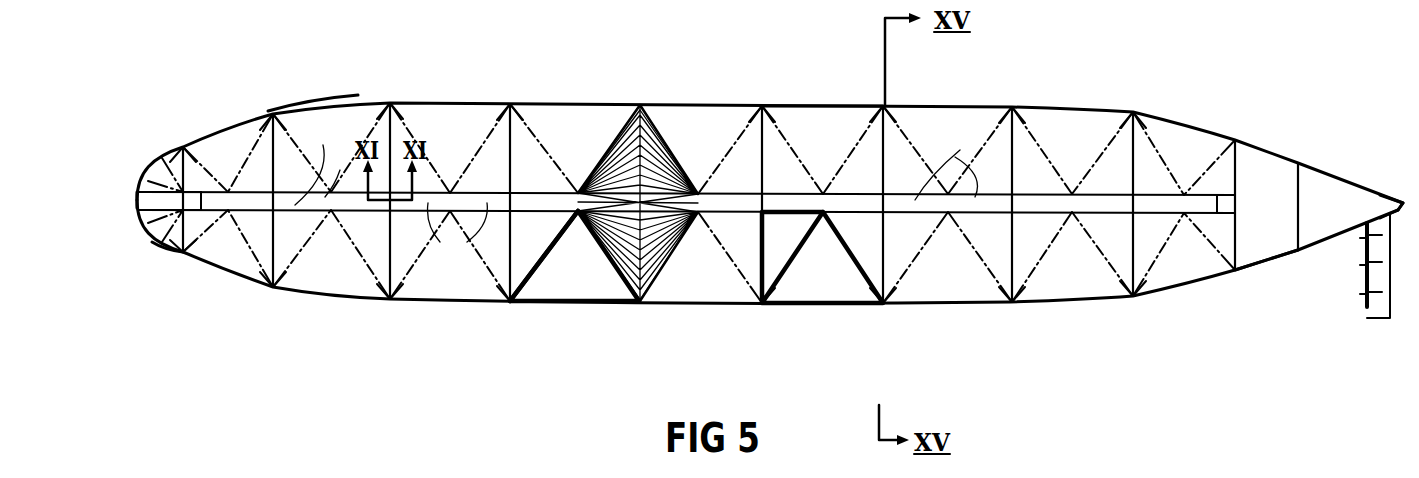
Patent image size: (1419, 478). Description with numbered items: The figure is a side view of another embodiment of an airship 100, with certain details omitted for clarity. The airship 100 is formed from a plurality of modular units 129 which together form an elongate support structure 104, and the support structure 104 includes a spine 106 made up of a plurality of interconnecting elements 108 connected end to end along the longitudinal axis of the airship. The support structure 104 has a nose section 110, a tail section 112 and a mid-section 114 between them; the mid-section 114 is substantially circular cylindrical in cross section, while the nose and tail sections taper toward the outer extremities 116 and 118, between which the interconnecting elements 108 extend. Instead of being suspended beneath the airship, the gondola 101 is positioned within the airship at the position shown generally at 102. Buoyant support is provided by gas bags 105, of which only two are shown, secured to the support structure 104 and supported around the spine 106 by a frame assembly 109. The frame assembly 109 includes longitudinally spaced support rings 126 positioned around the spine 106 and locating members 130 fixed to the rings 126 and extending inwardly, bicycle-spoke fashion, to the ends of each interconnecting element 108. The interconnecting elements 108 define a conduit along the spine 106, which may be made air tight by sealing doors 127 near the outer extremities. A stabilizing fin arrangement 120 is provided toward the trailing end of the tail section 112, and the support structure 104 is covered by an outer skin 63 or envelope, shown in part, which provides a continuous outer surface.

The airship 100 is at (180, 72).
The outer skin 63 is at (306, 94).
The gondola 101 is at (526, 260).
The position of the gondola 102 is at (578, 268).
The elongate support structure 104 is at (794, 96).
The gas bags 105 is at (820, 277).
The spine 106 is at (1036, 196).
The interconnecting elements 108 is at (1222, 103).
The frame assembly 109 is at (617, 133).
The nose section 110 is at (173, 270).
The tail section 112 is at (1253, 277).
The mid-section 114 is at (880, 322).
The outer extremity of the nose section 116 is at (150, 202).
The outer extremity of the tail section 118 is at (1405, 200).
The stabilizing fin arrangement 120 is at (1365, 335).
The support rings 126 is at (190, 188).
The sealing doors 127 is at (183, 192).
The modular units 129 is at (640, 97).
The locating members 130 is at (605, 158).